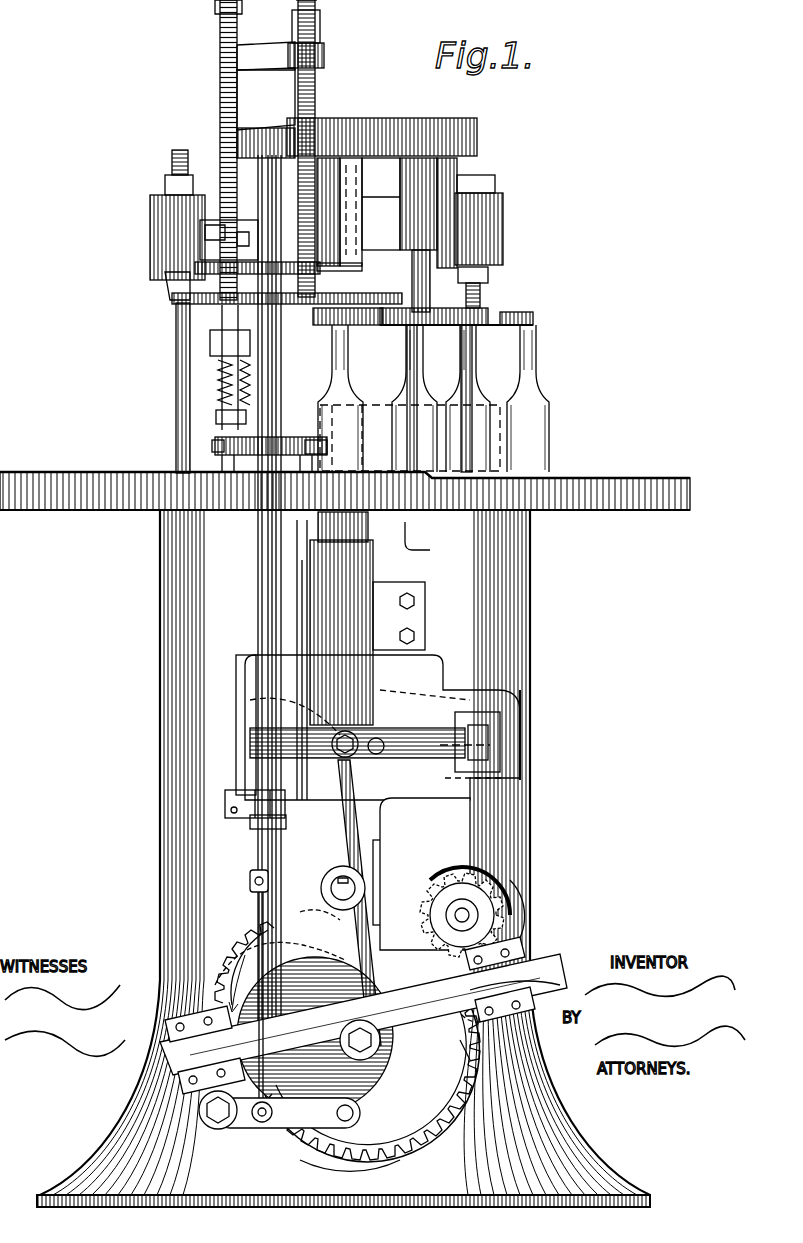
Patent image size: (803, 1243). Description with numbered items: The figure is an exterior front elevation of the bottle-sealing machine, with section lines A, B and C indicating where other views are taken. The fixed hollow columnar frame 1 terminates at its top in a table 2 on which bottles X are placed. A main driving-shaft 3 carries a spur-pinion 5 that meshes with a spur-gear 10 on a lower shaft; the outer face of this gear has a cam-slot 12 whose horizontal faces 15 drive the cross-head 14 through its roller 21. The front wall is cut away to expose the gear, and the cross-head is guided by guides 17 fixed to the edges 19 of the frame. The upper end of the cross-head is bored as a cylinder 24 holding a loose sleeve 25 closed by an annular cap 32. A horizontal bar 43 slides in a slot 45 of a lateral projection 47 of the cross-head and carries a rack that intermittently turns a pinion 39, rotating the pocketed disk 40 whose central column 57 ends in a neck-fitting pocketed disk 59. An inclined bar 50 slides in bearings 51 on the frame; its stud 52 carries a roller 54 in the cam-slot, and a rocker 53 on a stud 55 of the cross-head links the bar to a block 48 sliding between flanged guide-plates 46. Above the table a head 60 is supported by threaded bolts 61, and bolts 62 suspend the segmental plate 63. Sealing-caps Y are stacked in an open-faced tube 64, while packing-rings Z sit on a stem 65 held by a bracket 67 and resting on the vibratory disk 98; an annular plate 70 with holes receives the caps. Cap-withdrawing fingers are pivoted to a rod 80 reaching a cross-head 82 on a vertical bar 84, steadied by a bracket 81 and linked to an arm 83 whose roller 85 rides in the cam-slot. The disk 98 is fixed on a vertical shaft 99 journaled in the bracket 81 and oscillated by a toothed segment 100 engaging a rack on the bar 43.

The columnar frame 1 is at (520, 890).
The table 2 is at (575, 495).
The main driving-shaft 3 is at (465, 912).
The spur-pinion 5 is at (500, 945).
The spur-gear 10 is at (232, 965).
The cam-slot 12 is at (330, 1050).
The cross-head 14 is at (385, 818).
The horizontal faces of the cam-slot 15 is at (200, 975).
The guides 17 is at (415, 625).
The edges of the frame 19 is at (405, 545).
The roller 21 is at (300, 945).
The cylinder 24 is at (270, 566).
The cylindrical sleeve 25 is at (258, 530).
The annular cap 32 is at (357, 527).
The pinion 39 is at (483, 740).
The pocketed disk 40 is at (480, 430).
The horizontal bar 43 is at (440, 730).
The slot 45 is at (395, 715).
The flanged guide-plates 46 is at (560, 952).
The lateral projection 47 is at (460, 778).
The block 48 is at (230, 1128).
The inclined bar 50 is at (530, 965).
The bearings 51 is at (165, 1025).
The stud 52 is at (525, 1030).
The rocker 53 is at (343, 885).
The roller 54 is at (470, 1045).
The stud 55 is at (255, 880).
The central column 57 is at (420, 340).
The pocketed disk 59 is at (510, 316).
The head 60 is at (500, 215).
The bolts 61 is at (176, 392).
The bolts 62 is at (178, 298).
The segmental plate 63 is at (210, 340).
The open-faced vertical tube 64 is at (240, 92).
The vertical stem 65 is at (318, 35).
The bracket 67 is at (258, 48).
The annular plate 70 is at (170, 280).
The vertical rod 80 is at (215, 444).
The bracket 81 is at (225, 797).
The cross-head 82 is at (225, 450).
The arm 83 is at (245, 1120).
The vertical bar 84 is at (258, 600).
The roller 85 is at (335, 1156).
The vibratory disk 98 is at (222, 345).
The vertical shaft 99 is at (240, 673).
The toothed segment 100 is at (250, 822).
The section line A A is at (245, 727).
The section line B B is at (170, 288).
The section line C C is at (78, 322).
The bottles X is at (410, 438).
The sealing-caps Y is at (222, 105).
The packing-rings Z is at (315, 80).